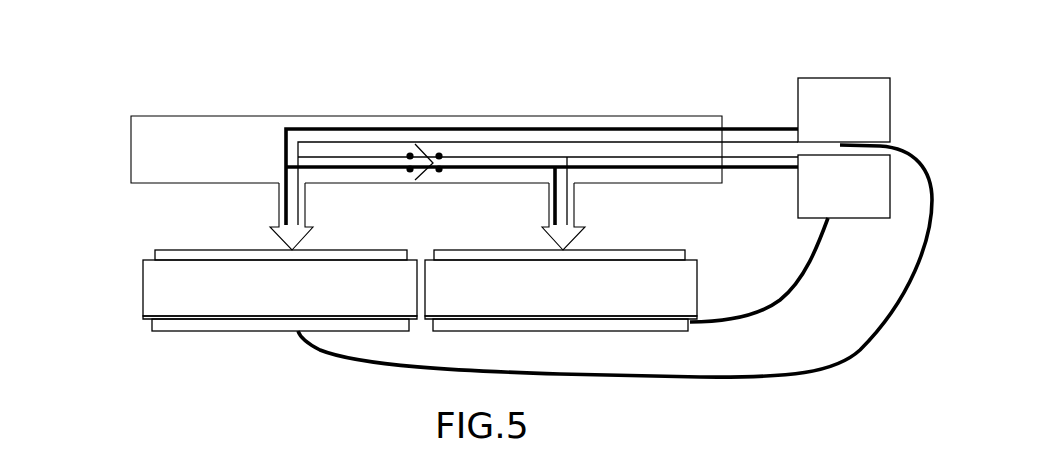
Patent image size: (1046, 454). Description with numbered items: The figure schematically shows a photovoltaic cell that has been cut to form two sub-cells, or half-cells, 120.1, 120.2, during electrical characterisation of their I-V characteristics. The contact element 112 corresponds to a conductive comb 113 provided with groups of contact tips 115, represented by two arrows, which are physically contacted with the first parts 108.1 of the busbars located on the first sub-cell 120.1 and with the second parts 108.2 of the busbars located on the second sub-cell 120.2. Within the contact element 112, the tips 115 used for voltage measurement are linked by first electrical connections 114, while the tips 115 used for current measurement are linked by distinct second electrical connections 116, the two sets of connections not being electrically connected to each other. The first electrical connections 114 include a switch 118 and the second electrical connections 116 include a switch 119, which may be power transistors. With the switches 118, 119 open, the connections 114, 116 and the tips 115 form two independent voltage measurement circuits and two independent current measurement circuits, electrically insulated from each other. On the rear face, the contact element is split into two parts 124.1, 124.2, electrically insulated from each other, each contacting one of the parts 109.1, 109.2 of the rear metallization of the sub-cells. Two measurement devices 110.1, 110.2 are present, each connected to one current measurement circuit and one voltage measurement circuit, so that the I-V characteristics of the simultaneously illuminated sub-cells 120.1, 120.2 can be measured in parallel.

The contact element 112 is at (660, 72).
The conductive comb 113 is at (175, 120).
The first electrical connections 114 is at (680, 156).
The second electrical connections 116 is at (607, 167).
The switch 118 is at (425, 144).
The switch 119 is at (424, 181).
The contact tips 115 is at (303, 240).
The measurement device 110.1 is at (840, 85).
The measurement device 110.2 is at (872, 216).
The first parts of the busbars 108.1 is at (173, 255).
The second parts of the busbars 108.2 is at (510, 255).
The first sub-cell 120.1 is at (148, 274).
The second sub-cell 120.2 is at (700, 270).
The part of the metallization 109.1 is at (150, 318).
The part of the metallization 109.2 is at (697, 318).
The part of the contact element 124.1 is at (183, 324).
The part of the contact element 124.2 is at (583, 326).